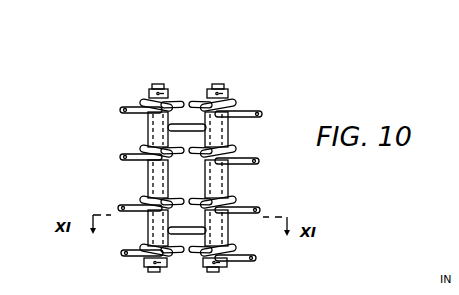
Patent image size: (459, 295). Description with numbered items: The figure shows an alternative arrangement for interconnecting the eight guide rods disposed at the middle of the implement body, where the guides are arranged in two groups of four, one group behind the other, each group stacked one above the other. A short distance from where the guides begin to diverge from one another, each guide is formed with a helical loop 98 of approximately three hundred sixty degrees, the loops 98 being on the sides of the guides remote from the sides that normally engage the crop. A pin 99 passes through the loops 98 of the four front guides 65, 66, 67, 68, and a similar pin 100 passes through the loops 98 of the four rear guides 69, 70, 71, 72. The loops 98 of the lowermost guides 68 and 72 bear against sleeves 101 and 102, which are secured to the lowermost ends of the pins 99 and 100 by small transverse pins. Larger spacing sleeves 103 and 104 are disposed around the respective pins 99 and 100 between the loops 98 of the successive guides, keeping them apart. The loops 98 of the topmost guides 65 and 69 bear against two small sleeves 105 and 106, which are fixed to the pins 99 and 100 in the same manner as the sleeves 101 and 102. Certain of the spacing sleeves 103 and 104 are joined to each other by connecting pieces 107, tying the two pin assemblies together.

The guide rod 65 is at (120, 110).
The guide rod 66 is at (120, 157).
The guide rod 67 is at (122, 205).
The guide rod 68 is at (124, 252).
The guide rod 69 is at (262, 114).
The guide rod 70 is at (259, 161).
The guide rod 71 is at (258, 208).
The guide rod 72 is at (256, 258).
The helical loop 98 is at (200, 198).
The pin 99 is at (160, 79).
The pin 100 is at (219, 84).
The sleeve 101 is at (148, 267).
The sleeve 102 is at (224, 269).
The spacing sleeve 103 is at (150, 136).
The spacing sleeve 104 is at (228, 136).
The small sleeve 105 is at (149, 94).
The small sleeve 106 is at (228, 94).
The connecting piece 107 is at (193, 102).